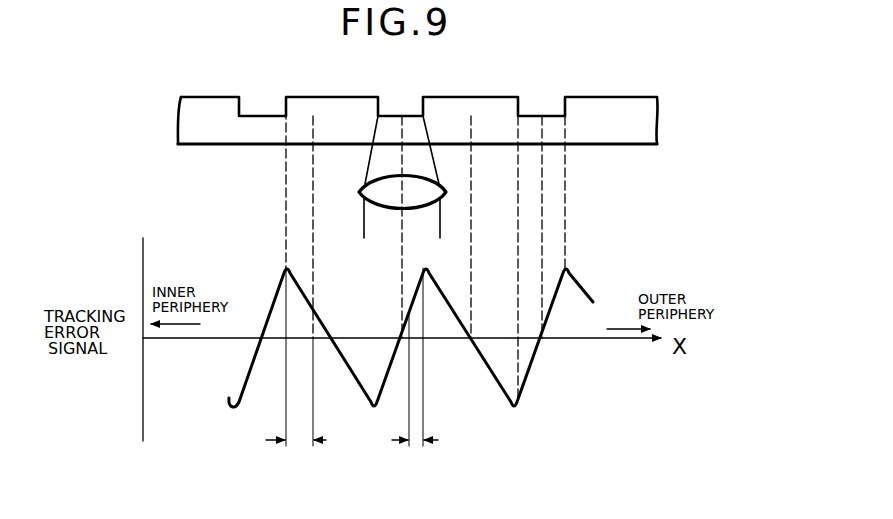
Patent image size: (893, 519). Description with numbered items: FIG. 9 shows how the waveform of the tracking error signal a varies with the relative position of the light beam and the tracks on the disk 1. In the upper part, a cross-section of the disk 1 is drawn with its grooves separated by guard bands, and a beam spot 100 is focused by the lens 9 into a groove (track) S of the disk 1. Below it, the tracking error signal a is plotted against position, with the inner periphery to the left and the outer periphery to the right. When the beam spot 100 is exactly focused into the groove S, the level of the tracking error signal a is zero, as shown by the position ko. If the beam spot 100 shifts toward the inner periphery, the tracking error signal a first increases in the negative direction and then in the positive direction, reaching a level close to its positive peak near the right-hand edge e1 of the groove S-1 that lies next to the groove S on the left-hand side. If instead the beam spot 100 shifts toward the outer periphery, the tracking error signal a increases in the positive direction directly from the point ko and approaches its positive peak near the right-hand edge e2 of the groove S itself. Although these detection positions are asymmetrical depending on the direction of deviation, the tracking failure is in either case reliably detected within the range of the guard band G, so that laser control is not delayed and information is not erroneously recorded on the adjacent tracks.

The disk 1 is at (638, 120).
The lens 9 is at (427, 199).
The beam spot 100 is at (380, 163).
The tracking error signal a is at (583, 284).
The zero level position ko is at (398, 336).
The groove (track) S is at (393, 108).
The guard band G is at (348, 97).
The right-hand edge of groove S-1 e1 is at (288, 97).
The right-hand edge of groove S e2 is at (423, 97).
The adjacent groove (track) S-1 is at (262, 107).